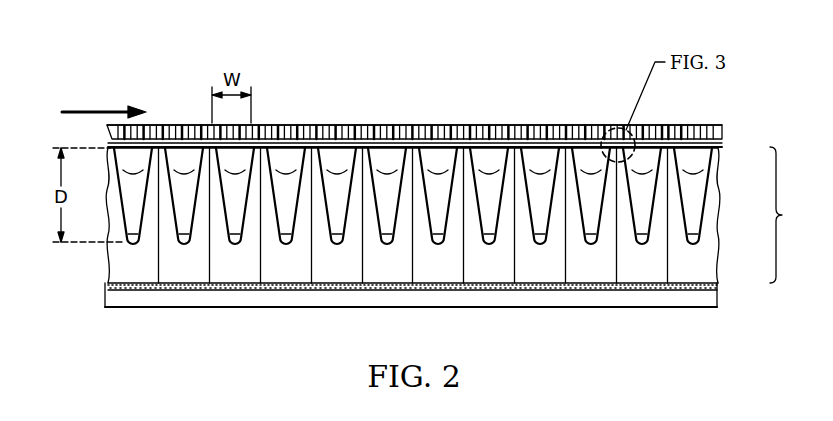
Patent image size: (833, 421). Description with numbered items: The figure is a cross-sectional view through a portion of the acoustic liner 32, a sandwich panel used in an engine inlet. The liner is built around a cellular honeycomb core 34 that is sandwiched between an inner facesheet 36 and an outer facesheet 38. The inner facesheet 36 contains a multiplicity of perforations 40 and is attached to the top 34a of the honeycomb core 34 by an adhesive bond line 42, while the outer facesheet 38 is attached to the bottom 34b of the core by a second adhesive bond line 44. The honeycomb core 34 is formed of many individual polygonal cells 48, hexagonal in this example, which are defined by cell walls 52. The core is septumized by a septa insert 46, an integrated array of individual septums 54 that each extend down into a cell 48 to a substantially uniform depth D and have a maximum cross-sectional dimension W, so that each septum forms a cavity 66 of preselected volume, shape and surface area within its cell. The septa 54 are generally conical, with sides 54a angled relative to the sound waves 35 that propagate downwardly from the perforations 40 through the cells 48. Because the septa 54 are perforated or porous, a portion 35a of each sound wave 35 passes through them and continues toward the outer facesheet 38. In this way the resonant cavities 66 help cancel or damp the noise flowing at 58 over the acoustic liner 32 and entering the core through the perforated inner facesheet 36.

The acoustic liner 32 is at (471, 60).
The honeycomb core 34 is at (456, 215).
The top of the honeycomb core 34a is at (442, 130).
The bottom of the honeycomb core 34b is at (599, 316).
The sound waves 35 is at (122, 180).
The portion of the sound wave 35a is at (128, 258).
The inner facesheet 36 is at (370, 133).
The outer facesheet 38 is at (137, 300).
The perforations 40 is at (182, 132).
The adhesive bond line 42 is at (667, 130).
The adhesive bond line 44 is at (285, 292).
The septa insert 46 is at (703, 130).
The cells 48 is at (188, 264).
The cell walls 52 is at (669, 268).
The septums 54 is at (340, 250).
The sides of the septa 54a is at (533, 215).
The sound waves/noise flow 58 is at (97, 112).
The cavities 66 is at (695, 212).